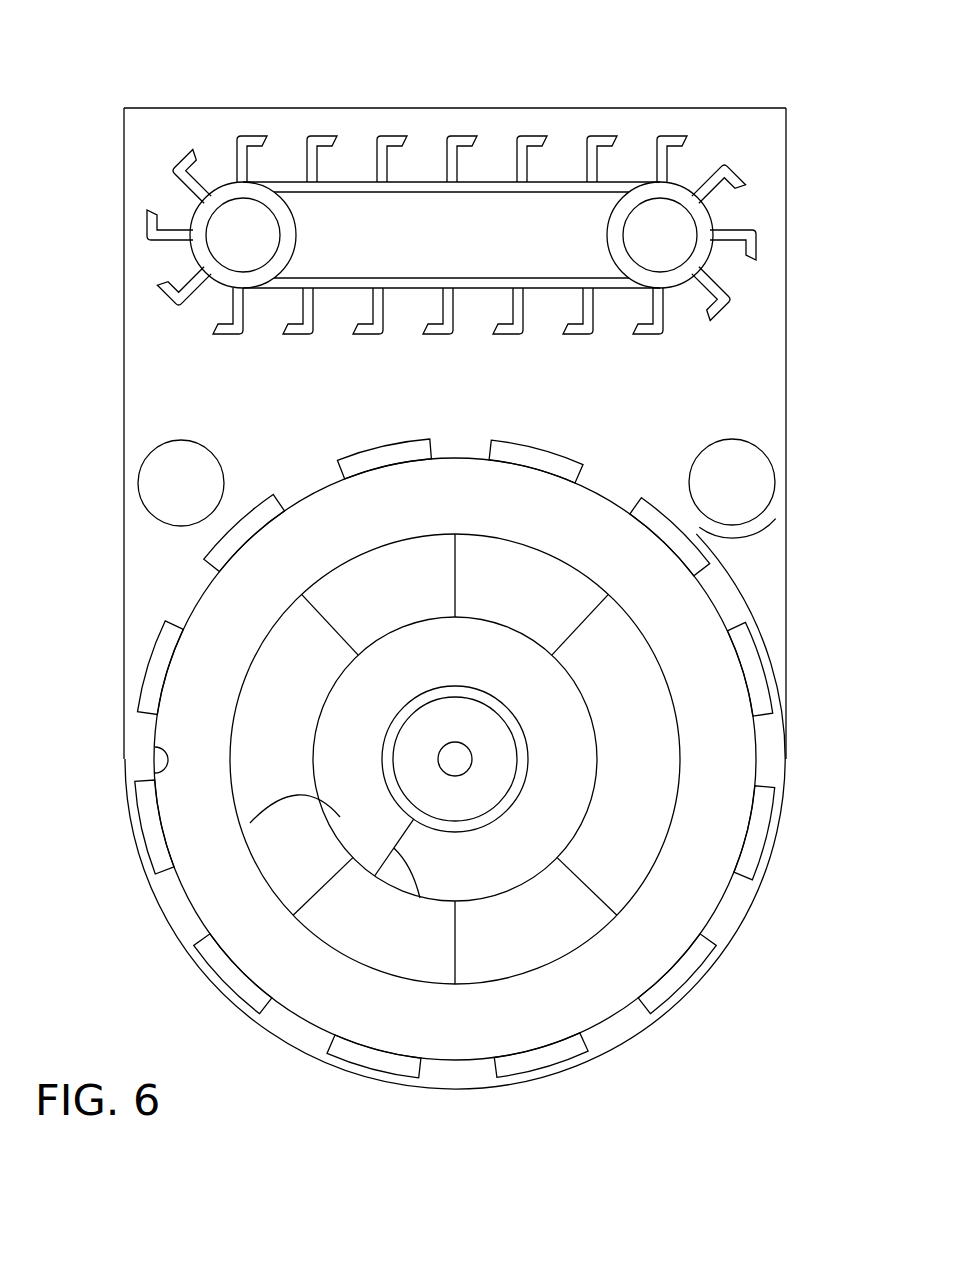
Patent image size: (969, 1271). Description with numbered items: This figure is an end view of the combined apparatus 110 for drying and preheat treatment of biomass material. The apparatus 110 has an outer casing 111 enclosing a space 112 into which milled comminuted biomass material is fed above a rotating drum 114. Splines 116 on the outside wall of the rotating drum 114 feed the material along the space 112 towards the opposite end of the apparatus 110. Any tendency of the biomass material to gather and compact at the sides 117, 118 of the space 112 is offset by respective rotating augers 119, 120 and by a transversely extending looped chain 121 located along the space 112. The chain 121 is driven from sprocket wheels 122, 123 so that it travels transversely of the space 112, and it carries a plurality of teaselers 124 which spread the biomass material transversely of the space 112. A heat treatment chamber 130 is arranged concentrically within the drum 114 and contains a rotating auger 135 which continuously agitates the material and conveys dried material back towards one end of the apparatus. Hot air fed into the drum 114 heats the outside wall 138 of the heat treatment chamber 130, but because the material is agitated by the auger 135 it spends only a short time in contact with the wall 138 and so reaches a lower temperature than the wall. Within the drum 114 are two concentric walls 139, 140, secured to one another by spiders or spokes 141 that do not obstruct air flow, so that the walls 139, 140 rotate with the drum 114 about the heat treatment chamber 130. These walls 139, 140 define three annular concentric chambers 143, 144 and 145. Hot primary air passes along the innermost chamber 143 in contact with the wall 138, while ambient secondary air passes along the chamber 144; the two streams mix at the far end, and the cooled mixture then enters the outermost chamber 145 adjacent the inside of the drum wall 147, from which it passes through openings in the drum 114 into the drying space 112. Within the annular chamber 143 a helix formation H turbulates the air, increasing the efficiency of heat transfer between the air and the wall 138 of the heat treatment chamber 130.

The combined apparatus for drying and preheat treatment of biomass material 110 is at (672, 92).
The outer casing 111 is at (787, 185).
The space 112 is at (472, 295).
The rotating drum 114 is at (190, 900).
The splines 116 is at (416, 454).
The side of the space 117 is at (143, 583).
The side of the space 118 is at (768, 560).
The rotating auger 119 is at (146, 489).
The rotating auger 120 is at (768, 468).
The looped chain 121 is at (342, 292).
The sprocket wheel 122 is at (291, 242).
The sprocket wheel 123 is at (612, 242).
The teaselers 124 is at (236, 153).
The heat treatment chamber 130 is at (490, 758).
The rotating auger 135 is at (470, 793).
The outside wall 138 is at (383, 792).
The concentric wall 139 is at (243, 827).
The concentric wall 140 is at (230, 780).
The spiders or spokes 141 is at (577, 623).
The annular chamber 143 is at (455, 759).
The annular chamber 144 is at (455, 759).
The annular chamber 145 is at (409, 492).
The drum wall 147 is at (154, 755).
The helix formation H is at (421, 900).